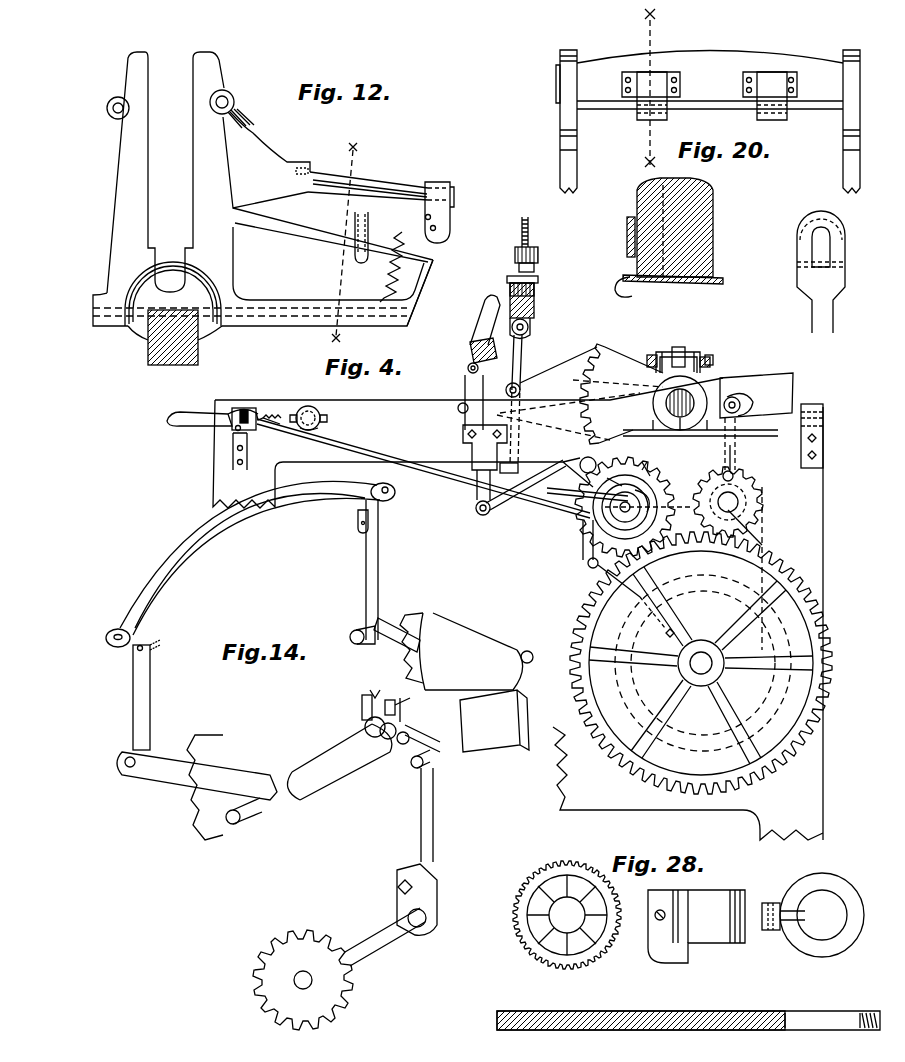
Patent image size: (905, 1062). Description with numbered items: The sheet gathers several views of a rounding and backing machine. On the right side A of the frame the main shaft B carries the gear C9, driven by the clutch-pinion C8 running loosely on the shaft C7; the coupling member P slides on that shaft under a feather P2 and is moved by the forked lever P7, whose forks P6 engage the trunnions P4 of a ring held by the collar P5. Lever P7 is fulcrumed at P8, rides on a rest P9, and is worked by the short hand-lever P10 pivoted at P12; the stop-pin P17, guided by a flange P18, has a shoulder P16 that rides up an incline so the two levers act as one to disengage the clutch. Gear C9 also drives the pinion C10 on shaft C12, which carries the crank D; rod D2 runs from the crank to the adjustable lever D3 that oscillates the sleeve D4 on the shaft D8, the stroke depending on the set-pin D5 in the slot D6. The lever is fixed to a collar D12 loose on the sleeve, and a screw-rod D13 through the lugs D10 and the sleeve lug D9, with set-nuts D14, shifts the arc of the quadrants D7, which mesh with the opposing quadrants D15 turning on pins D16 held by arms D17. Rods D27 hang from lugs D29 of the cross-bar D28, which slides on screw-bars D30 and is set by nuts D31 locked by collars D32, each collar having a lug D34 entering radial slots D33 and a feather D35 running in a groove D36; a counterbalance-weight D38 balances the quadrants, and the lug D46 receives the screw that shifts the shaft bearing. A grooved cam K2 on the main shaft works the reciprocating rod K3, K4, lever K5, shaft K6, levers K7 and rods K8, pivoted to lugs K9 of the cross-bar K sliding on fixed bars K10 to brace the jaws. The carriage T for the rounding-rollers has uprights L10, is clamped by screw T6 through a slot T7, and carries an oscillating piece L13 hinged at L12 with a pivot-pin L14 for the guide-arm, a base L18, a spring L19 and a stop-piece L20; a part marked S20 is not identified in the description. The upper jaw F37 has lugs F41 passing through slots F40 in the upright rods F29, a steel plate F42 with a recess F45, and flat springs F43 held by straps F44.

In FIG. 12, the uprights L10 is at (263, 196).
In FIG. 12, the hinge L12 is at (232, 93).
In FIG. 12, the oscillating piece L13 is at (266, 160).
In FIG. 12, the pivot-pin L14 is at (390, 182).
In FIG. 12, the supporting-base L18 is at (345, 258).
In FIG. 12, the spring L19 is at (380, 280).
In FIG. 12, the stop-piece L20 is at (370, 224).
In FIG. 12, the pivot stud S20 is at (109, 107).
In FIG. 12, the carriage T is at (173, 337).
In FIG. 20, the upright rod F29 is at (708, 121).
In FIG. 20, the upper jaw F37 is at (712, 90).
In FIG. 20, the slot F40 is at (836, 242).
In FIG. 20, the lug F41 is at (706, 73).
In FIG. 20, the steel plate F42 is at (710, 113).
In FIG. 20, the flat springs F43 is at (640, 118).
In FIG. 20, the straps F44 is at (622, 84).
In FIG. 20, the recess F45 is at (700, 285).
In FIG. 4, the right side of the frame A is at (518, 609).
In FIG. 4, the main shaft B is at (701, 663).
In FIG. 4, the shaft C7 is at (625, 507).
In FIG. 4, the clutch-pinion C8 is at (648, 455).
In FIG. 4, the gear C9 is at (701, 663).
In FIG. 4, the pinion C10 is at (760, 500).
In FIG. 14, the pinion C10 is at (303, 980).
In FIG. 4, the shaft C12 is at (745, 508).
In FIG. 14, the shaft C12 is at (370, 950).
In FIG. 4, the crank D is at (705, 488).
In FIG. 14, the crank D is at (438, 887).
In FIG. 4, the rod D2 is at (740, 452).
In FIG. 14, the rod D2 is at (434, 818).
In FIG. 4, the adjustable lever D3 is at (750, 432).
In FIG. 14, the adjustable lever D3 is at (442, 746).
In FIG. 4, the sleeve D4 is at (680, 432).
In FIG. 14, the sleeve D4 is at (405, 706).
In FIG. 4, the set-pin D5 is at (748, 400).
In FIG. 14, the set-pin D5 is at (412, 766).
In FIG. 4, the slot D6 is at (741, 407).
In FIG. 14, the slot D6 is at (406, 742).
In FIG. 4, the quadrants D7 is at (580, 394).
In FIG. 14, the quadrants D7 is at (311, 729).
In FIG. 4, the shaft D8 is at (668, 408).
In FIG. 14, the shaft D8 is at (527, 650).
In FIG. 4, the lug D9 is at (680, 345).
In FIG. 14, the lug D9 is at (394, 696).
In FIG. 4, the lugs D10 is at (650, 353).
In FIG. 14, the lugs D10 is at (362, 706).
In FIG. 4, the collar D12 is at (660, 400).
In FIG. 14, the collar D12 is at (365, 730).
In FIG. 4, the screw-rod D13 is at (715, 362).
In FIG. 14, the screw-rod D13 is at (377, 737).
In FIG. 4, the set-nuts D14 is at (665, 350).
In FIG. 14, the set-nuts D14 is at (372, 694).
In FIG. 4, the opposing quadrants D15 is at (558, 365).
In FIG. 4, the center pin D16 is at (521, 391).
In FIG. 14, the center pin D16 is at (354, 630).
In FIG. 14, the arms D17 is at (400, 615).
In FIG. 4, the rods D27 is at (525, 355).
In FIG. 14, the rods D27 is at (379, 562).
In FIG. 4, the cross-bar D28 is at (534, 313).
In FIG. 14, the cross-bar D28 is at (213, 575).
In FIG. 4, the lugs D29 is at (529, 329).
In FIG. 14, the lugs D29 is at (358, 532).
In FIG. 4, the upright screw-bars D30 is at (542, 232).
In FIG. 28, the upright screw-bars D30 is at (688, 1012).
In FIG. 4, the nuts D31 is at (534, 298).
In FIG. 28, the nuts D31 is at (567, 915).
In FIG. 4, the lock-collar D32 is at (538, 255).
In FIG. 28, the lock-collar D32 is at (768, 915).
In FIG. 4, the radial slots D33 is at (538, 280).
In FIG. 28, the radial slots D33 is at (590, 882).
In FIG. 4, the lug D34 is at (534, 268).
In FIG. 28, the lug D34 is at (696, 926).
In FIG. 28, the feather D35 is at (685, 915).
In FIG. 28, the longitudinal groove D36 is at (535, 1032).
In FIG. 4, the counterbalance-weight D38 is at (783, 380).
In FIG. 14, the counterbalance-weight D38 is at (494, 721).
In FIG. 4, the lug D46 is at (824, 412).
In FIG. 4, the cross-bar K is at (470, 350).
In FIG. 4, the grooved cam K2 is at (703, 663).
In FIG. 4, the reciprocating rod K3 is at (657, 617).
In FIG. 4, the reciprocating rod K4 is at (592, 568).
In FIG. 4, the lever K5 is at (584, 548).
In FIG. 4, the shaft K6 is at (596, 460).
In FIG. 4, the levers K7 is at (510, 503).
In FIG. 4, the rods K8 is at (488, 424).
In FIG. 4, the lugs K9 is at (480, 367).
In FIG. 4, the fixed bars K10 is at (480, 316).
In FIG. 4, the coupling member P is at (611, 507).
In FIG. 4, the feather P2 is at (660, 510).
In FIG. 4, the trunnions P4 is at (634, 560).
In FIG. 4, the collar P5 is at (650, 499).
In FIG. 4, the forks P6 is at (659, 464).
In FIG. 4, the lever P7 is at (405, 455).
In FIG. 4, the fulcrum P8 is at (475, 484).
In FIG. 4, the rest P9 is at (234, 462).
In FIG. 4, the hand-lever P10 is at (180, 422).
In FIG. 4, the pivot P12 is at (239, 408).
In FIG. 4, the shoulder P16 is at (233, 428).
In FIG. 4, the stop-pin P17 is at (250, 407).
In FIG. 4, the flange P18 is at (233, 410).
In FIG. 4, the clamping-screw T6 is at (320, 426).
In FIG. 4, the slot T7 is at (323, 414).